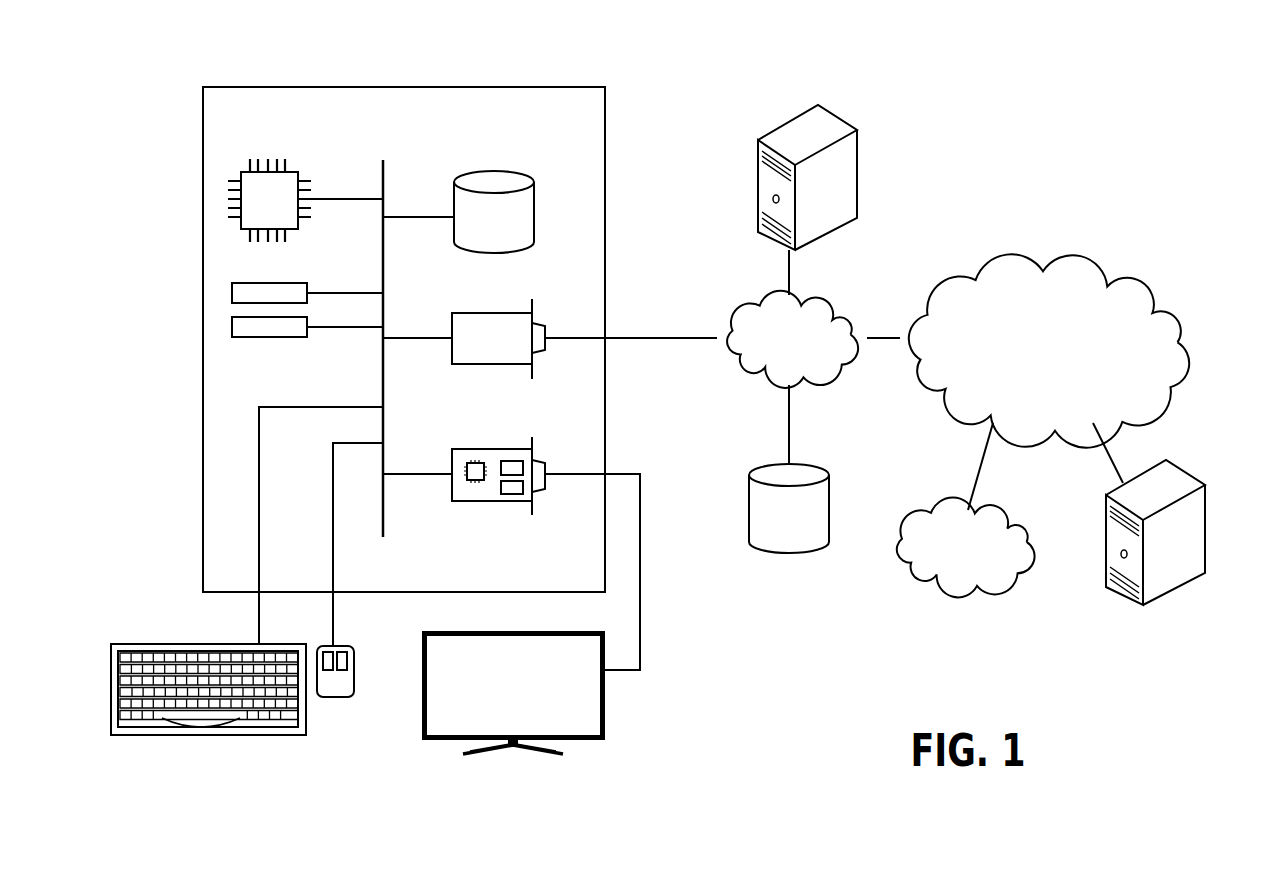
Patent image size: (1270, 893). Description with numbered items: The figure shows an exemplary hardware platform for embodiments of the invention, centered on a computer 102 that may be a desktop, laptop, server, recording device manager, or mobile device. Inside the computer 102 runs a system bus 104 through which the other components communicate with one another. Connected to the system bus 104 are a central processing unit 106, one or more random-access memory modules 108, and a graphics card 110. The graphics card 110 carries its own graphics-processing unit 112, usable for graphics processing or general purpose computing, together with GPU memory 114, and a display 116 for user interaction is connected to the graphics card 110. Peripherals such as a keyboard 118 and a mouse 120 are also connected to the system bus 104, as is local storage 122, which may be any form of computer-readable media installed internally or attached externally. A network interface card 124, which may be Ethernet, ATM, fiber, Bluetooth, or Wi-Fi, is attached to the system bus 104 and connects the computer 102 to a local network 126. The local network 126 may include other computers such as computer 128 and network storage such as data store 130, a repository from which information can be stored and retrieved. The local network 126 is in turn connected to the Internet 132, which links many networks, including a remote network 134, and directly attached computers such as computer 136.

The computer 102 is at (560, 87).
The system bus 104 is at (384, 172).
The central processing unit (CPU) 106 is at (290, 169).
The random-access memory (RAM) modules 108 is at (307, 324).
The graphics card 110 is at (452, 460).
The graphics-processing unit (GPU) 112 is at (475, 482).
The GPU memory 114 is at (512, 494).
The display 116 is at (605, 722).
The keyboard 118 is at (210, 735).
The mouse 120 is at (332, 698).
The local storage 122 is at (534, 200).
The network interface card (NIC) 124 is at (452, 320).
The local network 126 is at (843, 293).
The computer 128 is at (845, 115).
The data store 130 is at (823, 465).
The Internet 132 is at (1093, 263).
The remote network 134 is at (1017, 507).
The computer 136 is at (1180, 463).